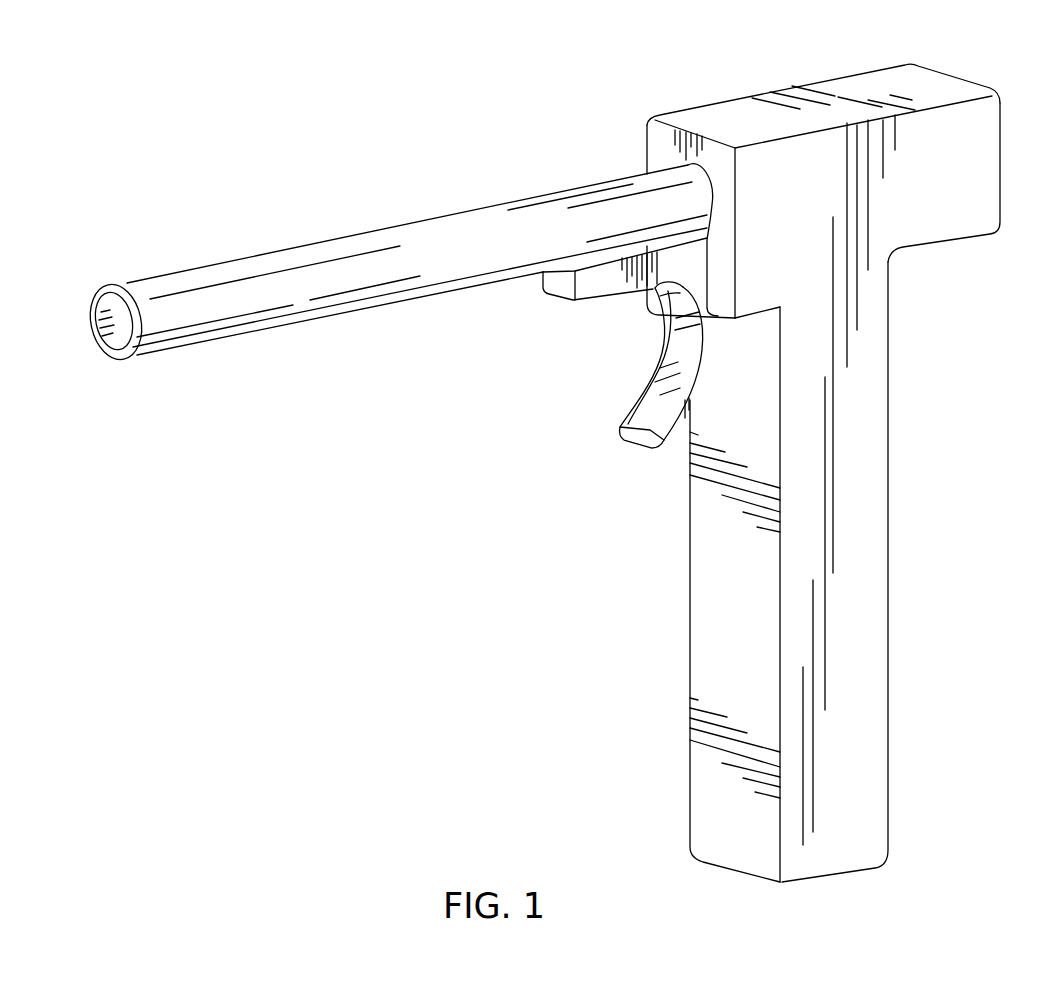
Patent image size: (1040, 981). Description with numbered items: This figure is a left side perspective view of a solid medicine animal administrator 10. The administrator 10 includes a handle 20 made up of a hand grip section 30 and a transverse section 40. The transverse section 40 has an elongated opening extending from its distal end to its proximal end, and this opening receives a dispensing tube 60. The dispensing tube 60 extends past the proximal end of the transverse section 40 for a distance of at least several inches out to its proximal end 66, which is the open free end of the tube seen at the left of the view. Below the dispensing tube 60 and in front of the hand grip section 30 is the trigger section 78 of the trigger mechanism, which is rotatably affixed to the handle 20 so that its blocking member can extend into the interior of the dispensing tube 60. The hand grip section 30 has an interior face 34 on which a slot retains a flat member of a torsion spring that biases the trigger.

The solid medicine animal administrator 10 is at (555, 457).
The handle 20 is at (819, 457).
The hand grip section 30 is at (870, 727).
The interior face 34 is at (700, 657).
The transverse section 40 is at (977, 117).
The dispensing tube 60 is at (395, 264).
The proximal end 66 is at (112, 292).
The trigger section 78 is at (647, 407).